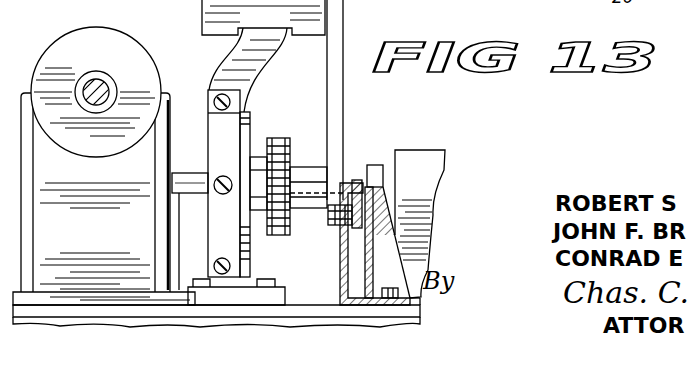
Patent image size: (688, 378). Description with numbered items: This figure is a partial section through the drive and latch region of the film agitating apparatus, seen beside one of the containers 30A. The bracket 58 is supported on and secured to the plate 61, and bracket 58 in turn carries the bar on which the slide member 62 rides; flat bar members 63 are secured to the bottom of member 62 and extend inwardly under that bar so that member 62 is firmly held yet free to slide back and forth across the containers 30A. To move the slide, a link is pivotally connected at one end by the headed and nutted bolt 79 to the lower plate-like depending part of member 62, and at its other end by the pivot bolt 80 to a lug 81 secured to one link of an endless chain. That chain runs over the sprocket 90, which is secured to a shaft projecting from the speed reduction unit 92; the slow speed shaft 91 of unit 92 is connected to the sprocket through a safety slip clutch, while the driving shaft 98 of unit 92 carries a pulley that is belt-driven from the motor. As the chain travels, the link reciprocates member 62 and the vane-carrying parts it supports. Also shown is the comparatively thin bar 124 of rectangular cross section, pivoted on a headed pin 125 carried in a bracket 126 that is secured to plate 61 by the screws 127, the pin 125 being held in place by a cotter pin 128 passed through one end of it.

The container 30A is at (414, 150).
The bracket 58 is at (252, 62).
The plate 61 is at (300, 314).
The slide member 62 is at (340, 22).
The flat bar members 63 is at (218, 37).
The headed and nutted bolt 79 is at (376, 165).
The pivot bolt 80 is at (246, 200).
The lug 81 is at (297, 166).
The sprocket 90 is at (280, 140).
The slow speed shaft 91 is at (197, 196).
The speed reduction unit 92 is at (100, 232).
The driving shaft 98 is at (99, 81).
The bar 124 is at (357, 180).
The headed pin 125 is at (390, 206).
The bracket 126 is at (346, 270).
The screws 127 is at (402, 291).
The cotter pin 128 is at (341, 230).